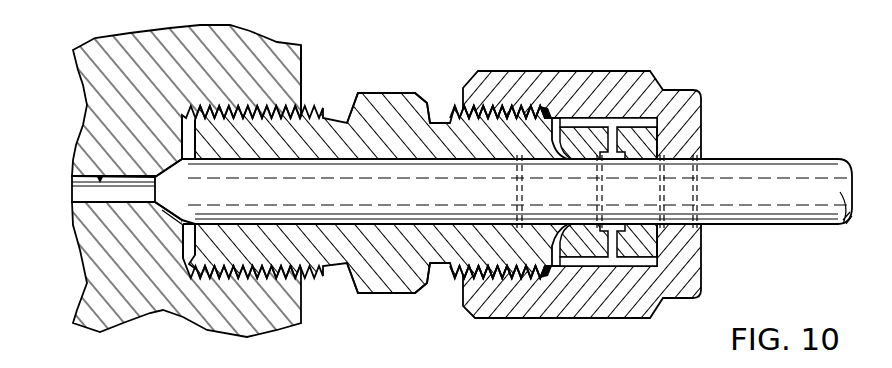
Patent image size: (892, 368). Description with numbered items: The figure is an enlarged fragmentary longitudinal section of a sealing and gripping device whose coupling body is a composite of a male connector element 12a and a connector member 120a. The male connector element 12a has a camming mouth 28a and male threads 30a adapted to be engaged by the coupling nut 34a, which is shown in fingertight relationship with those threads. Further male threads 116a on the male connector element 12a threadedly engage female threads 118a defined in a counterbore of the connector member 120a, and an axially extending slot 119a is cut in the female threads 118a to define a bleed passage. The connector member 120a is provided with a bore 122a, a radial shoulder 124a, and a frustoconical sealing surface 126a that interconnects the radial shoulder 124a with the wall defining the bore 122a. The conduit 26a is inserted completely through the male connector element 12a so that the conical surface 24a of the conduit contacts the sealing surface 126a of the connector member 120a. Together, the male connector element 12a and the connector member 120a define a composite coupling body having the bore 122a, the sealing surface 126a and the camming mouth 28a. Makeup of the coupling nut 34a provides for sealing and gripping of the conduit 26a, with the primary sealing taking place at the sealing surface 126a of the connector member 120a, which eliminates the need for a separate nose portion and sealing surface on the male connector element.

The female threads 118a is at (198, 110).
The axially extending slot 119a is at (270, 272).
The male threads 116a is at (378, 158).
The male connector element 12a is at (380, 113).
The male threads 30a is at (453, 115).
The coupling nut 34a is at (597, 75).
The camming mouth 28a is at (555, 250).
The conduit 26a is at (752, 161).
The bore 122a is at (100, 179).
The frustoconical sealing surface 126a is at (170, 167).
The conical surface 24a is at (170, 222).
The radial shoulder 124a is at (180, 133).
The connector member 120a is at (303, 67).